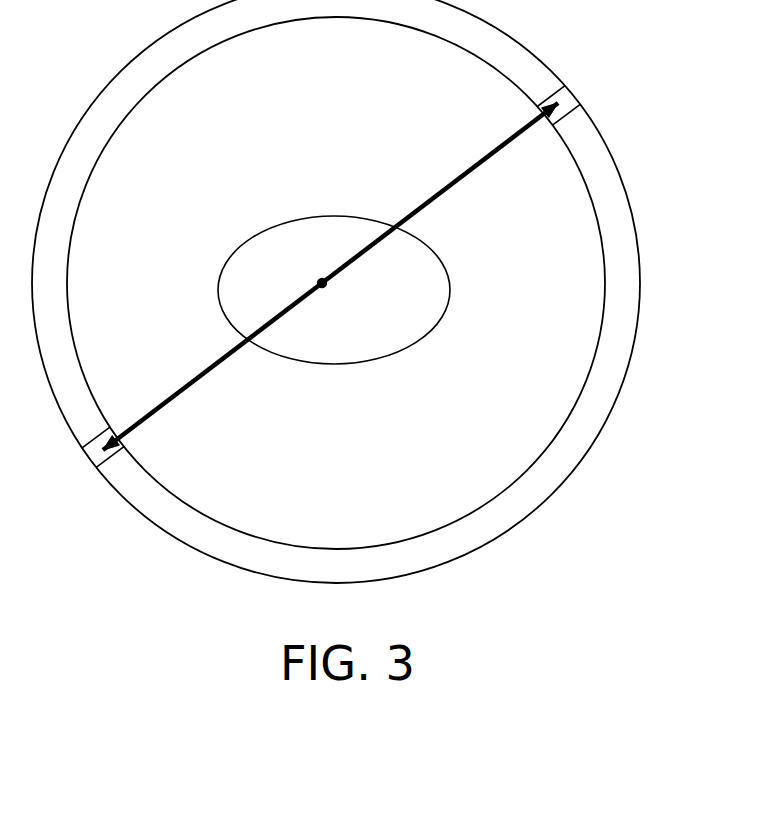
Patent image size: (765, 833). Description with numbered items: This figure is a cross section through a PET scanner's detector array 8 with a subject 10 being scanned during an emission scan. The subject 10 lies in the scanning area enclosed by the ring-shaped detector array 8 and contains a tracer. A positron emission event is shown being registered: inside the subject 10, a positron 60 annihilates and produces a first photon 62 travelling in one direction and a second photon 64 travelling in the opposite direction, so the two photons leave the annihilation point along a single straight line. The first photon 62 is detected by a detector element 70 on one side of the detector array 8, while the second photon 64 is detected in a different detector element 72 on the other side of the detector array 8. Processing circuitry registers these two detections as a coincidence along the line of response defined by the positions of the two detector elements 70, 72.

The detector array 8 is at (639, 256).
The subject 10 is at (410, 348).
The positron 60 is at (327, 288).
The first photon 62 is at (465, 173).
The second photon 64 is at (186, 389).
The detector element 70 is at (567, 96).
The detector element 72 is at (91, 459).